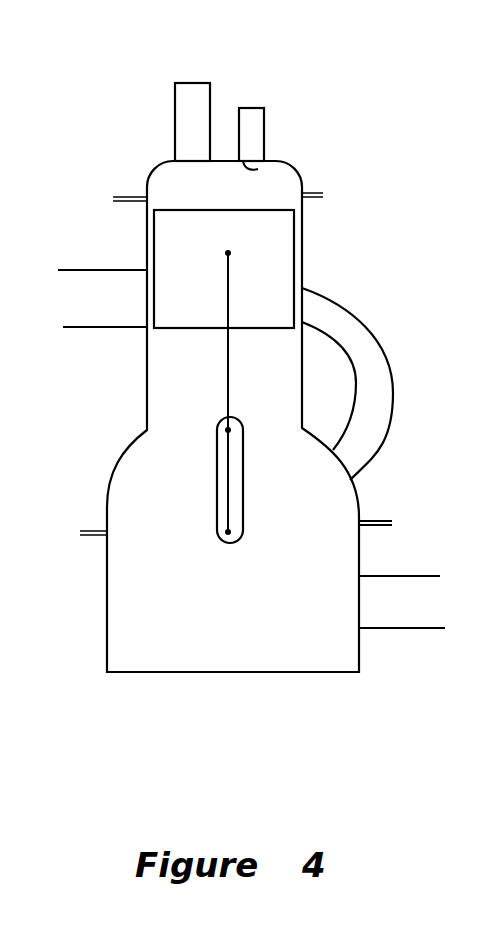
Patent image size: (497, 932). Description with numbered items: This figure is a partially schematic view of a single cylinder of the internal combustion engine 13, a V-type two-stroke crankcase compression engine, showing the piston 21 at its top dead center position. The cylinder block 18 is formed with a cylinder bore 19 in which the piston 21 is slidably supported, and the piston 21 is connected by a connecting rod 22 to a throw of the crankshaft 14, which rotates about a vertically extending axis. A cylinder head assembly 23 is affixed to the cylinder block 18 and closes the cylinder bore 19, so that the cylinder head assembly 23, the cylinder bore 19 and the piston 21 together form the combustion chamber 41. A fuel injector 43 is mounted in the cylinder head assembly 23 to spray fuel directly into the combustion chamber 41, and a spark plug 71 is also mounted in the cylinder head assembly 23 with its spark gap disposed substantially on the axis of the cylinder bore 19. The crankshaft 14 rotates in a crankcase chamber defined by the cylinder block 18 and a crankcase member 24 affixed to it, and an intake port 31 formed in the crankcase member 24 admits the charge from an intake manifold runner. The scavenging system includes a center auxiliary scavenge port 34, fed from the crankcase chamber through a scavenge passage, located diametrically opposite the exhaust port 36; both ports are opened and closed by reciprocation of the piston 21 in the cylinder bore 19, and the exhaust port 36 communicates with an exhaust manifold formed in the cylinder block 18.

The internal combustion engine 13 is at (96, 88).
The fuel injector 43 is at (188, 95).
The spark plug 71 is at (258, 122).
The cylinder head assembly 23 is at (150, 175).
The combustion chamber 41 is at (275, 180).
The cylinder block 18 is at (147, 233).
The piston 21 is at (275, 238).
The exhaust port 36 is at (147, 302).
The auxiliary scavenge port 34 is at (303, 308).
The cylinder bore 19 is at (148, 417).
The connecting rod 22 is at (228, 383).
The crankshaft 14 is at (243, 520).
The intake port 31 is at (402, 610).
The crankcase member 24 is at (212, 672).